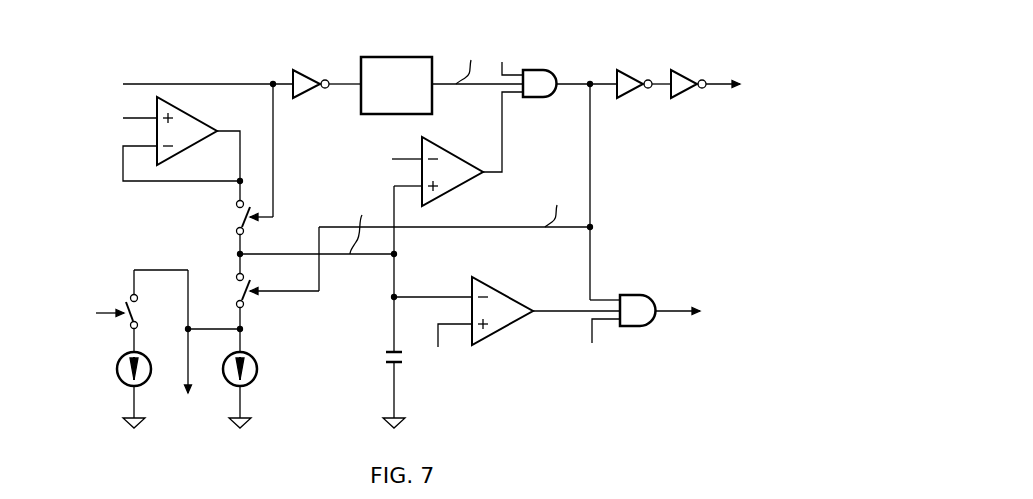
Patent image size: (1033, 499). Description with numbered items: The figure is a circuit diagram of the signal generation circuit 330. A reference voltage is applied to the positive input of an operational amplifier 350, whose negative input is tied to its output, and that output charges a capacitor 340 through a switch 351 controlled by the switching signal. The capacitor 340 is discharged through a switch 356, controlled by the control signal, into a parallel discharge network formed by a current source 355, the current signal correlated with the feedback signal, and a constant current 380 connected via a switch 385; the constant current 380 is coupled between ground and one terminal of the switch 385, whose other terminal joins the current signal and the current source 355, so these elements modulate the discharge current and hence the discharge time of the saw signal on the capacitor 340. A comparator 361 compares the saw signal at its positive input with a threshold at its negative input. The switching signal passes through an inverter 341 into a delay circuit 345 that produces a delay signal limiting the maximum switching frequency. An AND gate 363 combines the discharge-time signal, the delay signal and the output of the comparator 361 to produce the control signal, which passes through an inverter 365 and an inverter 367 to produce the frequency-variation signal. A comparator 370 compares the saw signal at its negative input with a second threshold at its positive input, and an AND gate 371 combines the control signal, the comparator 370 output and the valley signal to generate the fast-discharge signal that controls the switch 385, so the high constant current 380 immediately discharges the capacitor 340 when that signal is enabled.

The signal generation circuit 330 is at (777, 35).
The inverter 341 is at (327, 73).
The delay circuit 345 is at (396, 74).
The operational amplifier 350 is at (190, 129).
The switch 351 is at (225, 218).
The current source 355 is at (259, 369).
The switch 356 is at (225, 291).
The comparator 361 is at (454, 169).
The AND gate 363 is at (570, 70).
The inverter 365 is at (644, 72).
The inverter 367 is at (688, 72).
The comparator 370 is at (503, 308).
The AND gate 371 is at (638, 299).
The constant current 380 is at (116, 369).
The switch 385 is at (149, 312).
The capacitor 340 is at (371, 357).